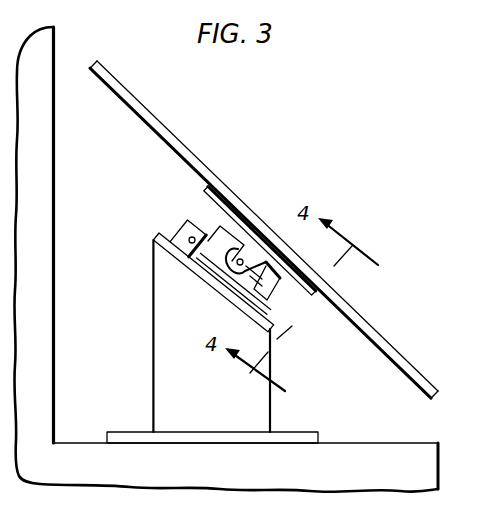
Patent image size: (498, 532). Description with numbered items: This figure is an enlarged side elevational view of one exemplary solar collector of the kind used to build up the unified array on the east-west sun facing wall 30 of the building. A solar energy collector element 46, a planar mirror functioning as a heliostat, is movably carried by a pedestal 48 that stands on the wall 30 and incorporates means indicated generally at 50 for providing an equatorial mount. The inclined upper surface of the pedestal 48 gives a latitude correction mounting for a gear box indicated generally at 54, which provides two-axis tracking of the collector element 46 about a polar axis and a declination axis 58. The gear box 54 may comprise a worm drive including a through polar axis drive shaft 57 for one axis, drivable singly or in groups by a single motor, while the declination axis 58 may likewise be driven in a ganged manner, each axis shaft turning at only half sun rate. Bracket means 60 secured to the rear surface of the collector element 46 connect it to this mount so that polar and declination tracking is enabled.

The east-west sun facing wall 30 is at (357, 443).
The solar energy collector element 46 is at (181, 146).
The pedestal 48 is at (208, 406).
The equatorial mount means 50 is at (160, 211).
The gear box 54 is at (284, 298).
The polar axis drive shaft 57 is at (194, 236).
The declination axis 58 is at (228, 273).
The bracket means 60 is at (234, 251).